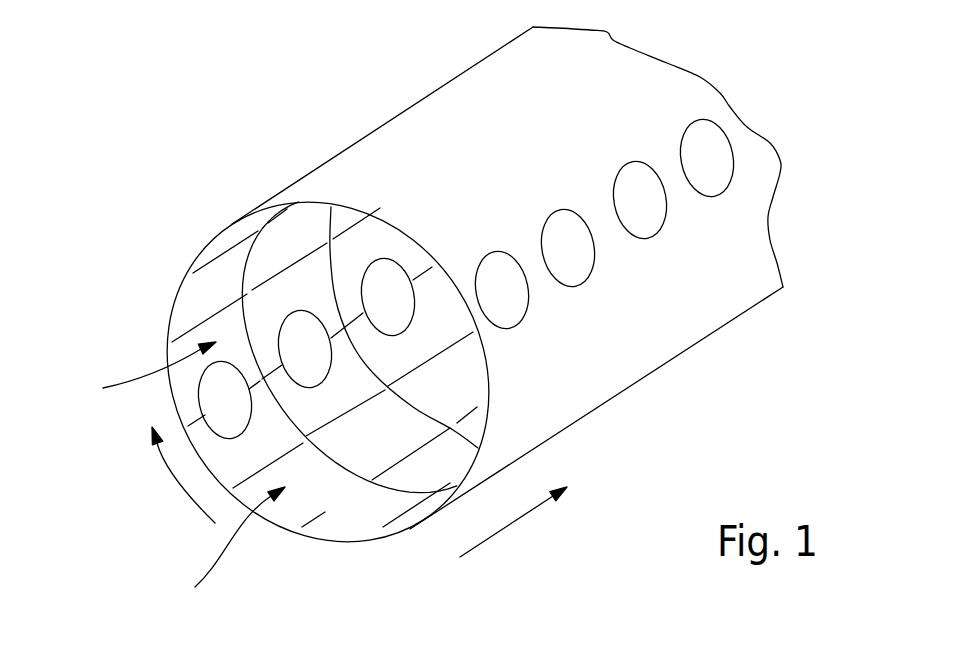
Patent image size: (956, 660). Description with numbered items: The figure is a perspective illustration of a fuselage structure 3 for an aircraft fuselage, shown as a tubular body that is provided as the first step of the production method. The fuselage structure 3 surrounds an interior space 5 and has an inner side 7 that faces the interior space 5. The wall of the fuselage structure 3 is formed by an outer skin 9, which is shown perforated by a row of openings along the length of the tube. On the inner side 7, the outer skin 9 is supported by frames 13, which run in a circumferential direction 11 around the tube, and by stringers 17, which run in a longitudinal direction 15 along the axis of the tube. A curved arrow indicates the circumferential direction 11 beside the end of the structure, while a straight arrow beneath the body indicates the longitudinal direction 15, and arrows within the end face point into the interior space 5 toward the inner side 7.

The fuselage structure 3 is at (141, 273).
The interior space 5 is at (149, 373).
The inner side 7 is at (229, 545).
The outer skin 9 is at (222, 273).
The circumferential direction 11 is at (170, 467).
The frames 13 is at (407, 489).
The longitudinal direction 15 is at (506, 527).
The stringers 17 is at (323, 515).